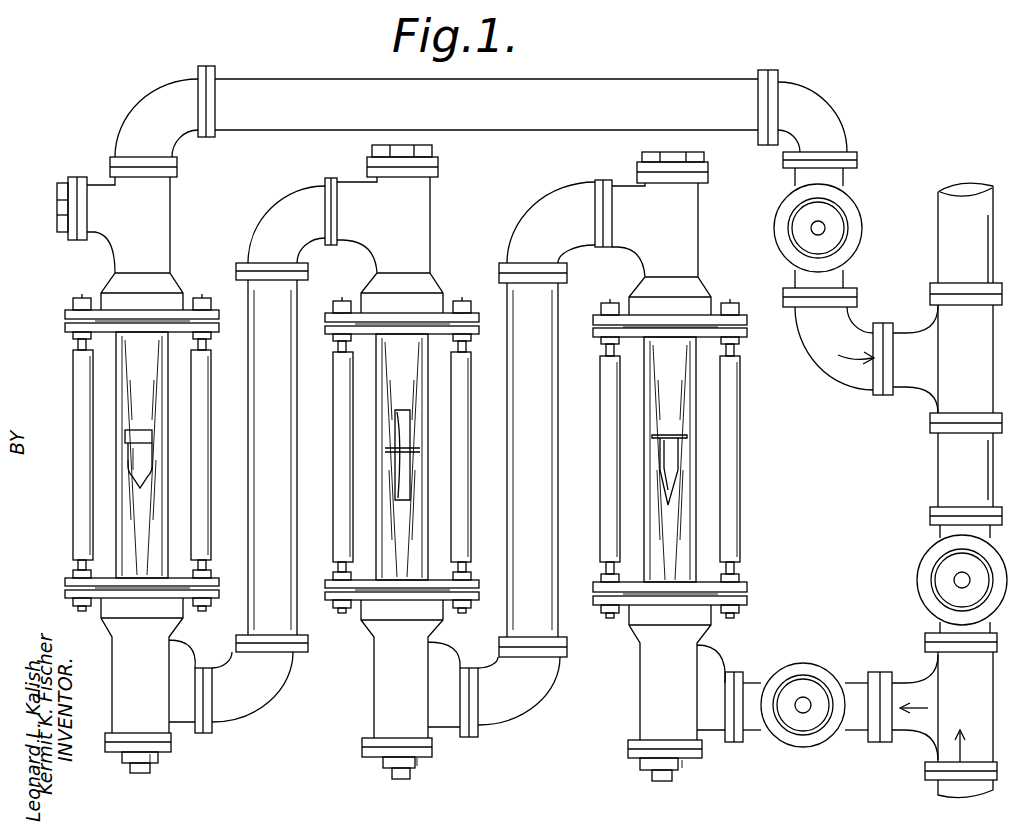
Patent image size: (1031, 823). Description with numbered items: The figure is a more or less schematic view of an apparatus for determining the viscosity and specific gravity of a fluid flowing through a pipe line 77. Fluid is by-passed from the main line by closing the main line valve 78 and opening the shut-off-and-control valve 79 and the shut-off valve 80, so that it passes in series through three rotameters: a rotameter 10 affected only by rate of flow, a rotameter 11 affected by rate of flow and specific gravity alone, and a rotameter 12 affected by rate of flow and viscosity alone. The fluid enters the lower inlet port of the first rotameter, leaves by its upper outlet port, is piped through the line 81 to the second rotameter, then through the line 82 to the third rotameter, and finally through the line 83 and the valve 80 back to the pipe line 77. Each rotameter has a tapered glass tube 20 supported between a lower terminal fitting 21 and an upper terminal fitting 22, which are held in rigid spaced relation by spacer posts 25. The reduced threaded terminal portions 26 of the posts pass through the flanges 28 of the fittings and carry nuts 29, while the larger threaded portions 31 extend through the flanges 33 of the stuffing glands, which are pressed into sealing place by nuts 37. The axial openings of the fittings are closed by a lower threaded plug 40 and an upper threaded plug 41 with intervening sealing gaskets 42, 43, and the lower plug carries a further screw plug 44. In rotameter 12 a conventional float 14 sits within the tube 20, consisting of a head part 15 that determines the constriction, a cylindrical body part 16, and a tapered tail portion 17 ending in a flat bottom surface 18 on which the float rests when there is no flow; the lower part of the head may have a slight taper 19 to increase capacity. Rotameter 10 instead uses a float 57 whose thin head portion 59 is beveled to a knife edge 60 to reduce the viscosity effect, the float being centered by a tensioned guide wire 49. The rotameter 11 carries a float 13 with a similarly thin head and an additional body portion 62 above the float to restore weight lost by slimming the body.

The rotameter 10 is at (786, 467).
The rotameter 11 is at (330, 458).
The rotameter 12 is at (71, 467).
The float 13 is at (420, 464).
The float 14 is at (153, 461).
The head part 15 is at (152, 438).
The body part 16 is at (128, 450).
The tail portion 17 is at (147, 476).
The flat bottom surface 18 is at (142, 489).
The taper 19 is at (396, 452).
The tapered glass tube 20 is at (163, 530).
The terminal fitting 21 is at (166, 722).
The terminal fitting 22 is at (118, 185).
The spacer posts 25 is at (80, 500).
The reduced threaded terminal portions 26 is at (203, 298).
The flanges 28 is at (65, 314).
The nuts 29 is at (208, 310).
The threaded portions 31 is at (76, 350).
The flanges 33 is at (70, 334).
The nuts 37 is at (336, 342).
The threaded plug 40 is at (160, 758).
The threaded plug 41 is at (66, 238).
The sealing gasket 42 is at (171, 746).
The sealing gasket 43 is at (78, 243).
The screw plug 44 is at (150, 770).
The guide wire 49 is at (405, 515).
The float 57 is at (680, 447).
The head portion 59 is at (412, 456).
The knife edge 60 is at (418, 458).
The additional body portion 62 is at (410, 436).
The pipe line 77 is at (993, 704).
The main line valve 78 is at (925, 568).
The shut-off-and-control valve 79 is at (812, 663).
The shut-off valve 80 is at (860, 224).
The line 81 is at (545, 503).
The line 82 is at (280, 608).
The line 83 is at (545, 88).